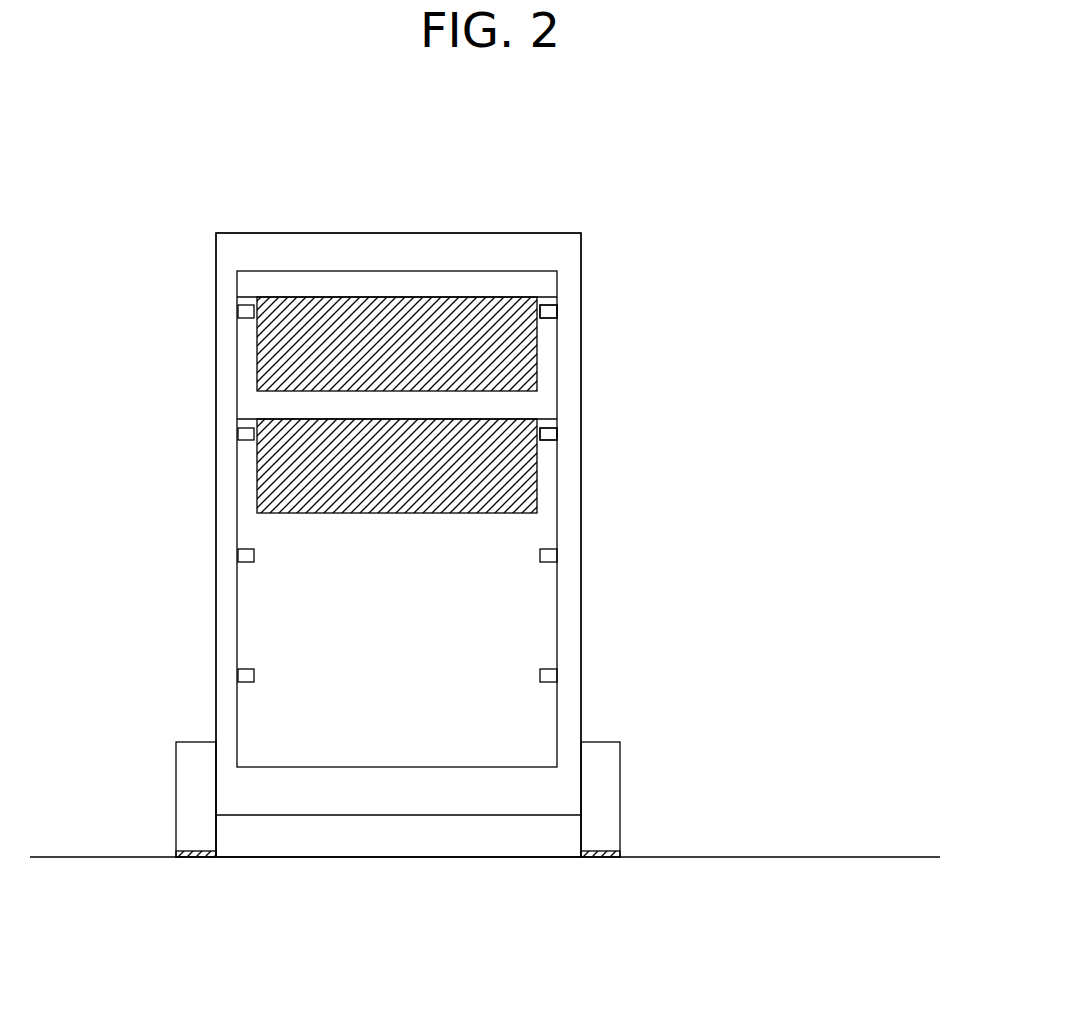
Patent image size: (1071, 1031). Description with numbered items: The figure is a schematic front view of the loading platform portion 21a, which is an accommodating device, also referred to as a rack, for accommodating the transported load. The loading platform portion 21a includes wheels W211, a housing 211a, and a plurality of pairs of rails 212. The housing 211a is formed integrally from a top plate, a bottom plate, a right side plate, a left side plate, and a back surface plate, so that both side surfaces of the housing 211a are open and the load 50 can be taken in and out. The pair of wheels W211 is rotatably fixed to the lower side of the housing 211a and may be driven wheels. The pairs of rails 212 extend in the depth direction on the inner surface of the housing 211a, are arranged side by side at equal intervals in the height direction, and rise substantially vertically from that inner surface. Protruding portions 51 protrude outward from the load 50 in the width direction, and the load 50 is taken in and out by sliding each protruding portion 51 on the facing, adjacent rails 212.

The loading platform portion 21a is at (262, 205).
The housing 211a is at (565, 250).
The rails 212 is at (552, 309).
The load 50 is at (538, 377).
The protruding portion 51 is at (548, 299).
The wheels W211 is at (176, 798).